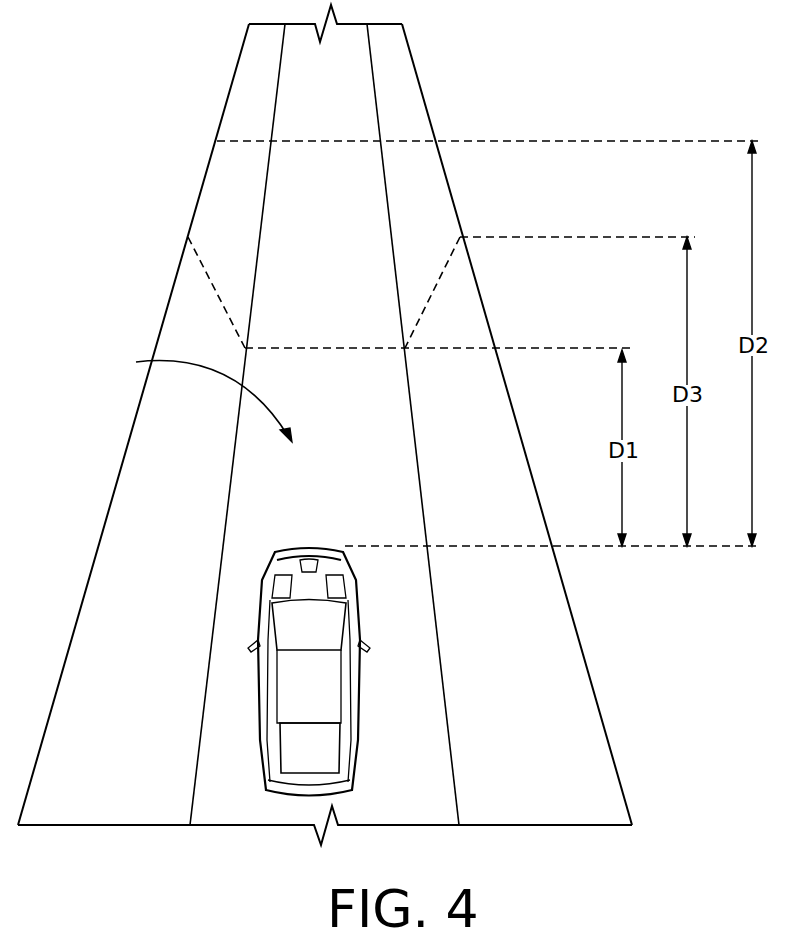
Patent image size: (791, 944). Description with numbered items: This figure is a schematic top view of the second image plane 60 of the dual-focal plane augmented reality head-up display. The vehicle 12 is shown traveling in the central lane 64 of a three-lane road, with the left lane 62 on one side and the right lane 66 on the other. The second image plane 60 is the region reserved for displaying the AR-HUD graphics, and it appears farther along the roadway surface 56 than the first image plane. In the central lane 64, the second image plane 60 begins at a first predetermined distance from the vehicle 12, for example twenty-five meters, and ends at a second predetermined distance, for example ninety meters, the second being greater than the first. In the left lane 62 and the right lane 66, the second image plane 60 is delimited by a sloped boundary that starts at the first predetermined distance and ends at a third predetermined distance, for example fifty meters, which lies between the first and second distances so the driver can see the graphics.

The vehicle 12 is at (323, 698).
The roadway surface 56 is at (201, 394).
The second image plane 60 is at (240, 140).
The left lane 62 is at (156, 495).
The central lane 64 is at (382, 505).
The right lane 66 is at (486, 433).